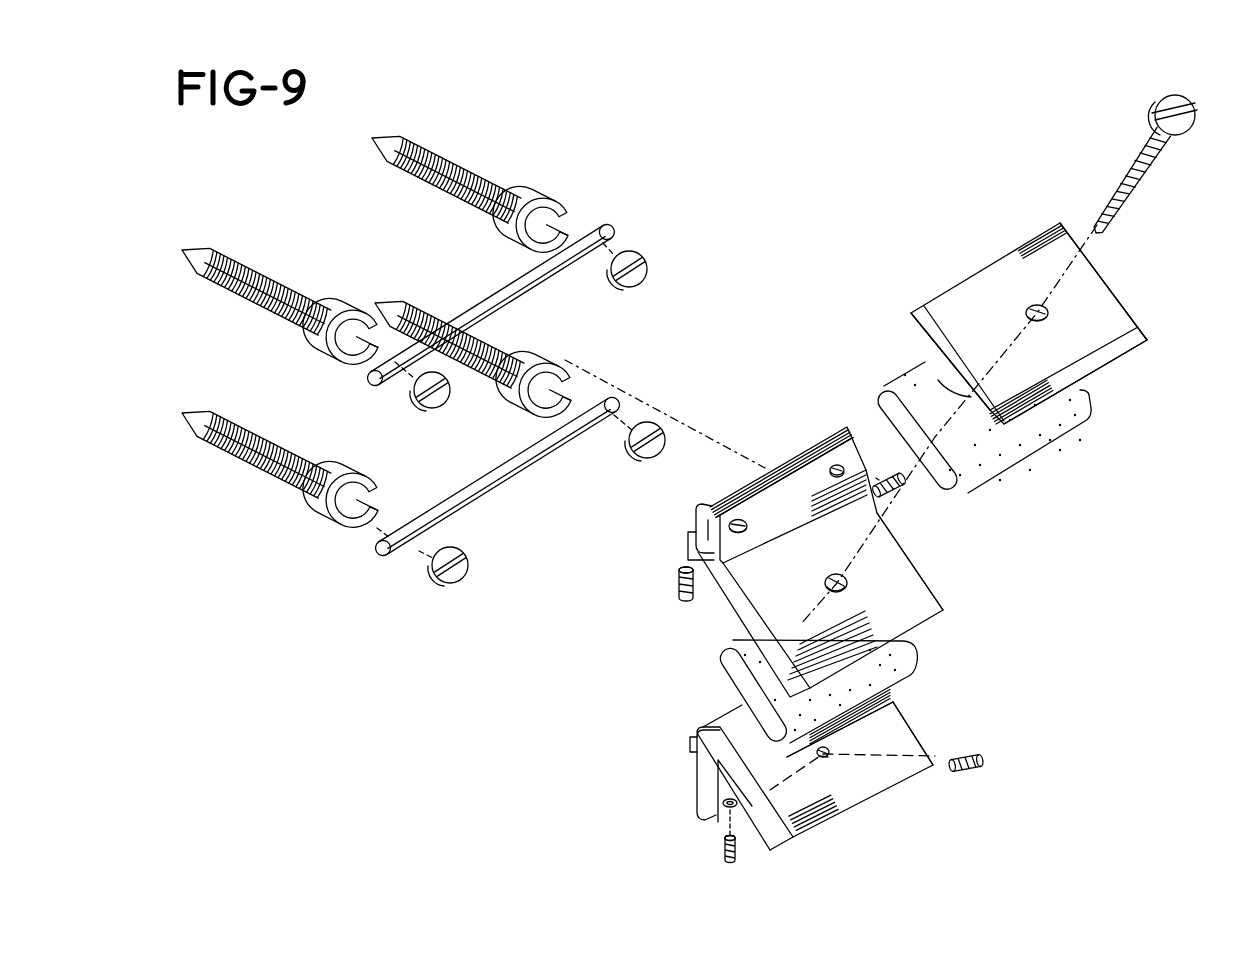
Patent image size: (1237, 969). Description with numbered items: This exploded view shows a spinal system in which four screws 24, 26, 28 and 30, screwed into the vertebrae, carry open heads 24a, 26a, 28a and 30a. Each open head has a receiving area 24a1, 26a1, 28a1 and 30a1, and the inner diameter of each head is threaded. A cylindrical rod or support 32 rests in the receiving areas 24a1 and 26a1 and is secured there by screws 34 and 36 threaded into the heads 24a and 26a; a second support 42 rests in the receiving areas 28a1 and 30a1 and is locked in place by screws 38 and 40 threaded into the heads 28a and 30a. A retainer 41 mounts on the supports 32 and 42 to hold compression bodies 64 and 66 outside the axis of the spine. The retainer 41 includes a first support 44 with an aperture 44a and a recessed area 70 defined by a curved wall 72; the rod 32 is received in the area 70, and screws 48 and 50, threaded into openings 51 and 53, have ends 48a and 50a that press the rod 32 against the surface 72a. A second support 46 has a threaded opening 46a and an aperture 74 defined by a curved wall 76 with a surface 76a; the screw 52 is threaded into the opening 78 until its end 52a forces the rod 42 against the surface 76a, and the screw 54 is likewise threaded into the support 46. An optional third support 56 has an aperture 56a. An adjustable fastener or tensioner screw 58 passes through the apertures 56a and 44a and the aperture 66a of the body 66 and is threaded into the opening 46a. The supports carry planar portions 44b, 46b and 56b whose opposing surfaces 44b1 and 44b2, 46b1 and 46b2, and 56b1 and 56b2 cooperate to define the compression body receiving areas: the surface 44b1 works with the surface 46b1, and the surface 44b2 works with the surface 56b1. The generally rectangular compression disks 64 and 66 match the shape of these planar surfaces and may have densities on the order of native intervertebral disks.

The screw 24 is at (462, 162).
The open head 24a is at (536, 190).
The receiving area 24a1 is at (566, 228).
The screw 26 is at (247, 262).
The open head 26a is at (334, 306).
The receiving area 26a1 is at (347, 326).
The screw 28 is at (430, 318).
The open head 28a is at (554, 356).
The receiving area 28a1 is at (546, 420).
The screw 30 is at (264, 434).
The open head 30a is at (340, 470).
The receiving area 30a1 is at (352, 534).
The support 32 is at (547, 274).
The screw 34 is at (650, 254).
The screw 36 is at (430, 408).
The screw 38 is at (660, 424).
The screw 40 is at (465, 549).
The support 42 is at (525, 470).
The retainer 41 is at (1018, 192).
The first support 44 is at (923, 630).
The aperture 44a is at (850, 578).
The planar portion 44b is at (950, 608).
The surface 44b1 is at (930, 584).
The surface 44b2 is at (715, 618).
The second support 46 is at (903, 778).
The threaded opening 46a is at (827, 763).
The planar portion 46b is at (897, 707).
The surface 46b1 is at (903, 737).
The surface 46b2 is at (773, 853).
The screw 48 is at (674, 598).
The end 48a is at (674, 568).
The screw 50 is at (903, 490).
The end 50a is at (868, 476).
The threaded opening 51 is at (741, 522).
The screw 52 is at (740, 853).
The end 52a is at (720, 837).
The threaded opening 53 is at (833, 468).
The screw 54 is at (983, 767).
The third support 56 is at (1150, 343).
The aperture 56a is at (1038, 300).
The planar portion 56b is at (937, 297).
The surface 56b1 is at (1120, 300).
The surface 56b2 is at (1103, 370).
The adjustable fastener 58 is at (1133, 163).
The compression disk 64 is at (920, 667).
The compression body 66 is at (1057, 433).
The aperture 66a is at (938, 380).
The recessed area 70 is at (656, 506).
The curved wall 72 is at (710, 508).
The surface 72a is at (689, 525).
The aperture 74 is at (707, 787).
The curved wall 76 is at (707, 817).
The surface 76a is at (697, 763).
The opening 78 is at (760, 780).